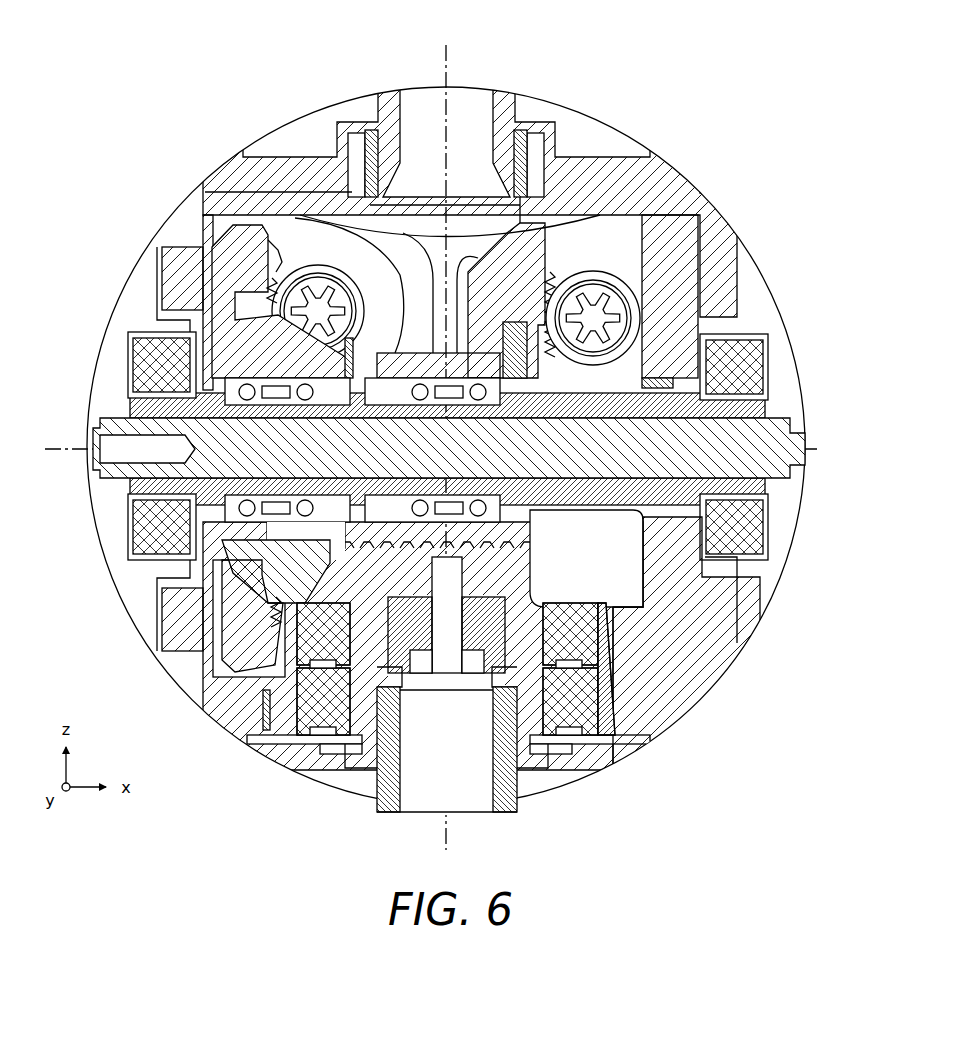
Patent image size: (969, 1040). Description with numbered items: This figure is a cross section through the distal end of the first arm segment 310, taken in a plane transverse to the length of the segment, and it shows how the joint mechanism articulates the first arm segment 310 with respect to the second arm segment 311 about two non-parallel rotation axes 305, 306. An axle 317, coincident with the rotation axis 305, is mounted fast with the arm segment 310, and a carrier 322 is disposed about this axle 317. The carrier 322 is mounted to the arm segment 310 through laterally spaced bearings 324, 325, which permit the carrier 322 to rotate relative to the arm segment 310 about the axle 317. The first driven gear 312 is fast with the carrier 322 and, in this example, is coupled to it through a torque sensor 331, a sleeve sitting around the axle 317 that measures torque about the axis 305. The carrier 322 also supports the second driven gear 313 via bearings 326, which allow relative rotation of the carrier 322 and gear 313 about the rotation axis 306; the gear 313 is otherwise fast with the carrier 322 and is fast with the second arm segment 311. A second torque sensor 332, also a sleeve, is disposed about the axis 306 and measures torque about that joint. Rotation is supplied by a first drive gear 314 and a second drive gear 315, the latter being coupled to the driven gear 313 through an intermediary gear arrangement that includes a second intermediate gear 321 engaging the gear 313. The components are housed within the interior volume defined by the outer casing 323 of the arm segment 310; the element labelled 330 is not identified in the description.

The rotation axis 305 is at (60, 449).
The rotation axis 306 is at (452, 58).
The first arm segment 310 is at (760, 585).
The second arm segment 311 is at (305, 125).
The first driven gear 312 is at (527, 252).
The second driven gear 313 is at (528, 720).
The first drive gear 314 is at (648, 305).
The second drive gear 315 is at (300, 255).
The axle 317 is at (793, 424).
The second intermediate gear 321 is at (246, 575).
The carrier 322 is at (688, 311).
The outer casing 323 is at (112, 520).
The bearing 324 is at (745, 362).
The bearing 325 is at (143, 367).
The bearings 326 is at (303, 712).
The left support block 330 is at (225, 268).
The torque sensor 331 is at (765, 495).
The torque sensor 332 is at (375, 800).